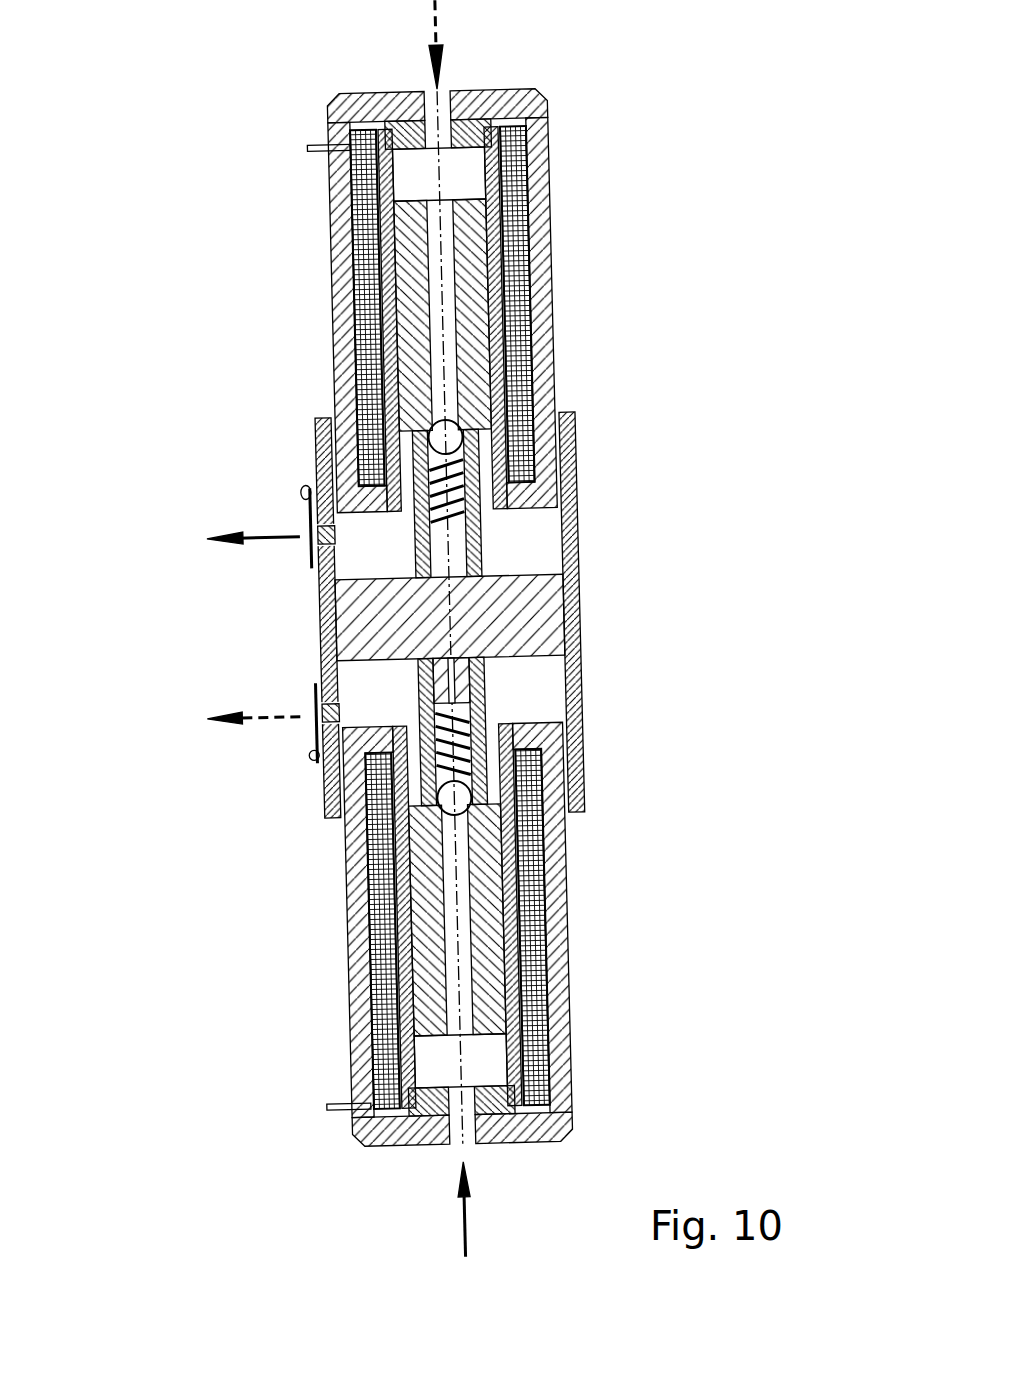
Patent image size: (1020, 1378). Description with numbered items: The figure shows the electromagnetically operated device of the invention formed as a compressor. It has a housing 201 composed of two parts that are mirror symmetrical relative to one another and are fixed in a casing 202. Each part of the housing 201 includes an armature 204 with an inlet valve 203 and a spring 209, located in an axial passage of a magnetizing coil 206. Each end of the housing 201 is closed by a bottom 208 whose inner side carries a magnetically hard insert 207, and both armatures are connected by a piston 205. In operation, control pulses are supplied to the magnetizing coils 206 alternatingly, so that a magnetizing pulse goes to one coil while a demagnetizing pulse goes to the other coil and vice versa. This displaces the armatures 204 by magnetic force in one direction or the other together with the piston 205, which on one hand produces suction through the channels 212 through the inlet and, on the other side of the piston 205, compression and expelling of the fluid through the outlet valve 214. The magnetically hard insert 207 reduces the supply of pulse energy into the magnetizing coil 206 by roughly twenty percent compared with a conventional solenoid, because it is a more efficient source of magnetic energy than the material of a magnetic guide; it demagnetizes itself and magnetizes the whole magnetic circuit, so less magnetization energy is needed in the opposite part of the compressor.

The housing 201 is at (337, 932).
The casing 202 is at (318, 618).
The inlet valve 203 is at (330, 535).
The armature 204 is at (566, 614).
The piston 205 is at (532, 615).
The magnetizing coil 206 is at (312, 621).
The magnetically hard insert 207 is at (589, 117).
The bottom 208 is at (539, 68).
The spring 209 is at (609, 613).
The channels 212 is at (430, 512).
The outlet valve 214 is at (561, 614).